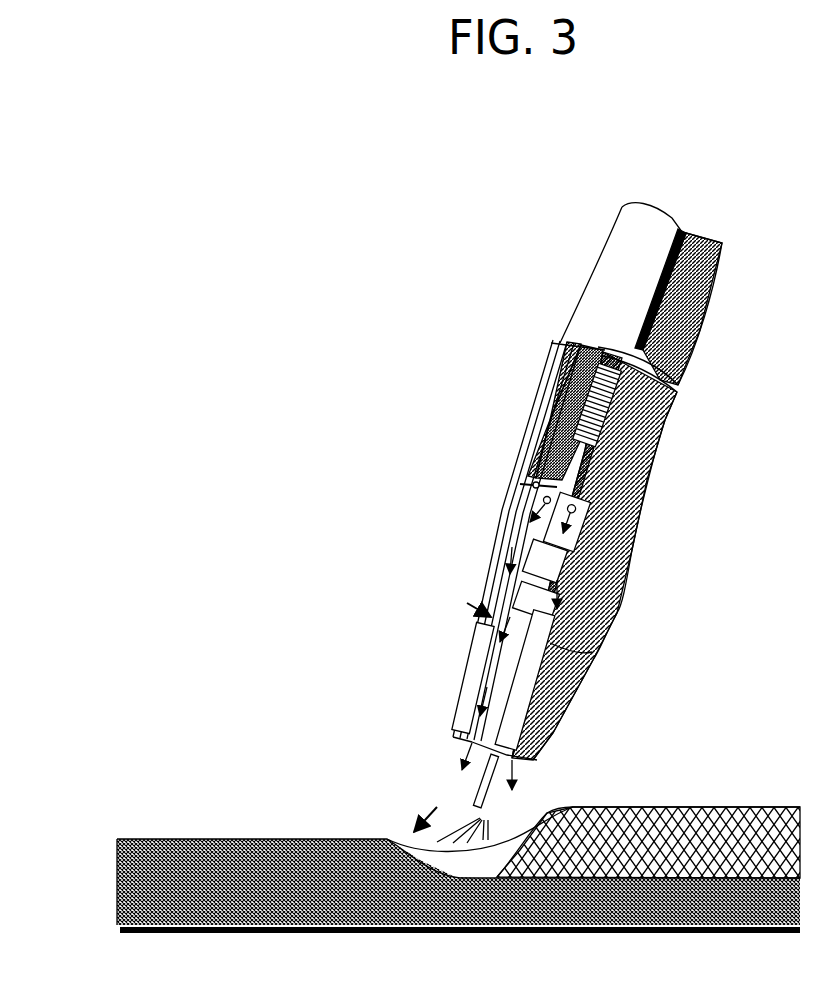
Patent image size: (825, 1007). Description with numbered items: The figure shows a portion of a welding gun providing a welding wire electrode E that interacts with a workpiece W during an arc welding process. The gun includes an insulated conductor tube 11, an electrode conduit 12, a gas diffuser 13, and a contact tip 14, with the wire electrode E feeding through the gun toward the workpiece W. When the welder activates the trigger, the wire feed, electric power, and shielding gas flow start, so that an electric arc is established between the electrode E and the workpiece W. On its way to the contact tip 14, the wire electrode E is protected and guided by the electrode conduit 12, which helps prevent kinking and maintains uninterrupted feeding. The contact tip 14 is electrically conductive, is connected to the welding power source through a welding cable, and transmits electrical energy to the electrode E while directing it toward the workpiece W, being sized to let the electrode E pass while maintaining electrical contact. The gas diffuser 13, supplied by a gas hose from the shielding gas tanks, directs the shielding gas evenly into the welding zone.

The insulated conductor tube 11 is at (598, 268).
The electrode conduit 12 is at (614, 423).
The gas diffuser 13 is at (566, 558).
The contact tip 14 is at (488, 668).
The wire electrode E is at (465, 788).
The workpiece W is at (153, 838).